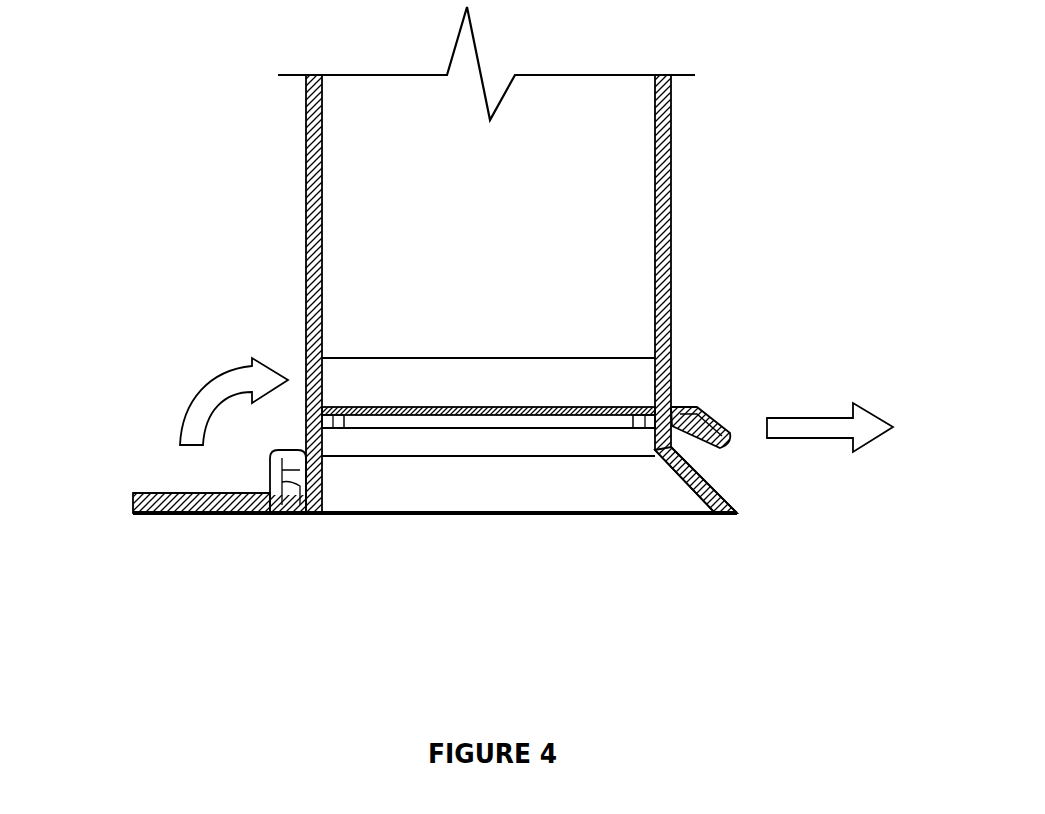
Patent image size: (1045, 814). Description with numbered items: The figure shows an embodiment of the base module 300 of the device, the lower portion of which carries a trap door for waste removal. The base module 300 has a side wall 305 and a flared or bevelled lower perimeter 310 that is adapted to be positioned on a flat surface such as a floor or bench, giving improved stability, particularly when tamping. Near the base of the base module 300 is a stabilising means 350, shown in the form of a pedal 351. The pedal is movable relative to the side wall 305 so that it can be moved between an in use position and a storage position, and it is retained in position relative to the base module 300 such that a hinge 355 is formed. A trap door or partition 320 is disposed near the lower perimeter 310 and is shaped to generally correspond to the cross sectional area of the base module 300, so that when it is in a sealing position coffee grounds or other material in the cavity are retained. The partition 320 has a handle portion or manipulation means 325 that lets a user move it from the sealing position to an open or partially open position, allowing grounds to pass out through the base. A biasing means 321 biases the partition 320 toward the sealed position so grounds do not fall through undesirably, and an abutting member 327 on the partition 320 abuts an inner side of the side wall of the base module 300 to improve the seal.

The base module 300 is at (217, 305).
The side wall 305 is at (306, 318).
The flared lower perimeter 310 is at (720, 513).
The partition 320 is at (463, 415).
The biasing means 321 is at (345, 407).
The manipulation means 325 is at (730, 433).
The abutting member 327 is at (306, 380).
The stabilising means 350 is at (180, 517).
The pedal 351 is at (180, 493).
The hinge 355 is at (313, 517).